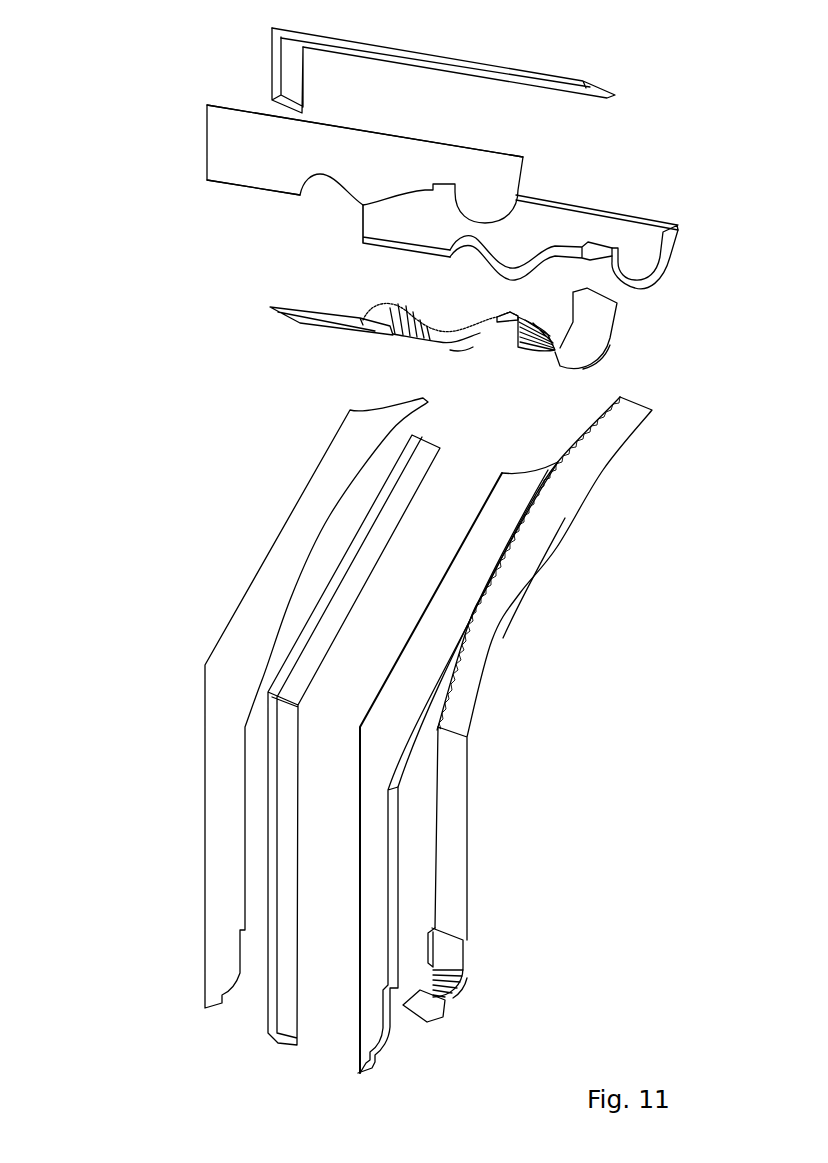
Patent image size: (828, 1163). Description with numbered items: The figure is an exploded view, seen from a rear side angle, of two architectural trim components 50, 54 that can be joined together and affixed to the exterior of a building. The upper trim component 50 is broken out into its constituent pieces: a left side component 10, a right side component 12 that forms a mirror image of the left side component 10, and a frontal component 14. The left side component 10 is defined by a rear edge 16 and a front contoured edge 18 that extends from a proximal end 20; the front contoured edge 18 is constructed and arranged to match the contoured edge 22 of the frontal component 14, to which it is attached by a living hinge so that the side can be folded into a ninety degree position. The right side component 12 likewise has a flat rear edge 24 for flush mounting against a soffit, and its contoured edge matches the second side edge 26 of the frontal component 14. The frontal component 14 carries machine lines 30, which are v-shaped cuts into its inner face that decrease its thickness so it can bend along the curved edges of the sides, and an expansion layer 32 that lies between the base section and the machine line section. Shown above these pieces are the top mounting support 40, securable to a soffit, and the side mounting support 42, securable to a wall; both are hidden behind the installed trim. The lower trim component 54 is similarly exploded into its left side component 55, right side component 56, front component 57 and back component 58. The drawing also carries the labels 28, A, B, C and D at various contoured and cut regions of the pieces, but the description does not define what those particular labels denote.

The left side component 10 is at (520, 160).
The right side component 12 is at (672, 231).
The frontal component 14 is at (606, 318).
The rear edge 16 is at (347, 128).
The front contoured edge 18 is at (278, 193).
The proximal end 20 is at (593, 210).
The contoured edge 22 is at (363, 240).
The rear edge 24 is at (543, 318).
The second side edge 26 is at (495, 317).
The strip 28 is at (319, 307).
The machine lines 30 is at (418, 343).
The expansion layer 32 is at (518, 313).
The top mounting support 40 is at (437, 57).
The side mounting support 42 is at (275, 63).
The architectural trim component 50 is at (105, 145).
The architectural trim component 54 is at (105, 646).
The left side component 55 is at (215, 803).
The right side component 56 is at (377, 843).
The front component 57 is at (463, 822).
The back component 58 is at (287, 717).
The region A is at (470, 350).
The region B is at (605, 357).
The region C is at (530, 577).
The region D is at (465, 993).